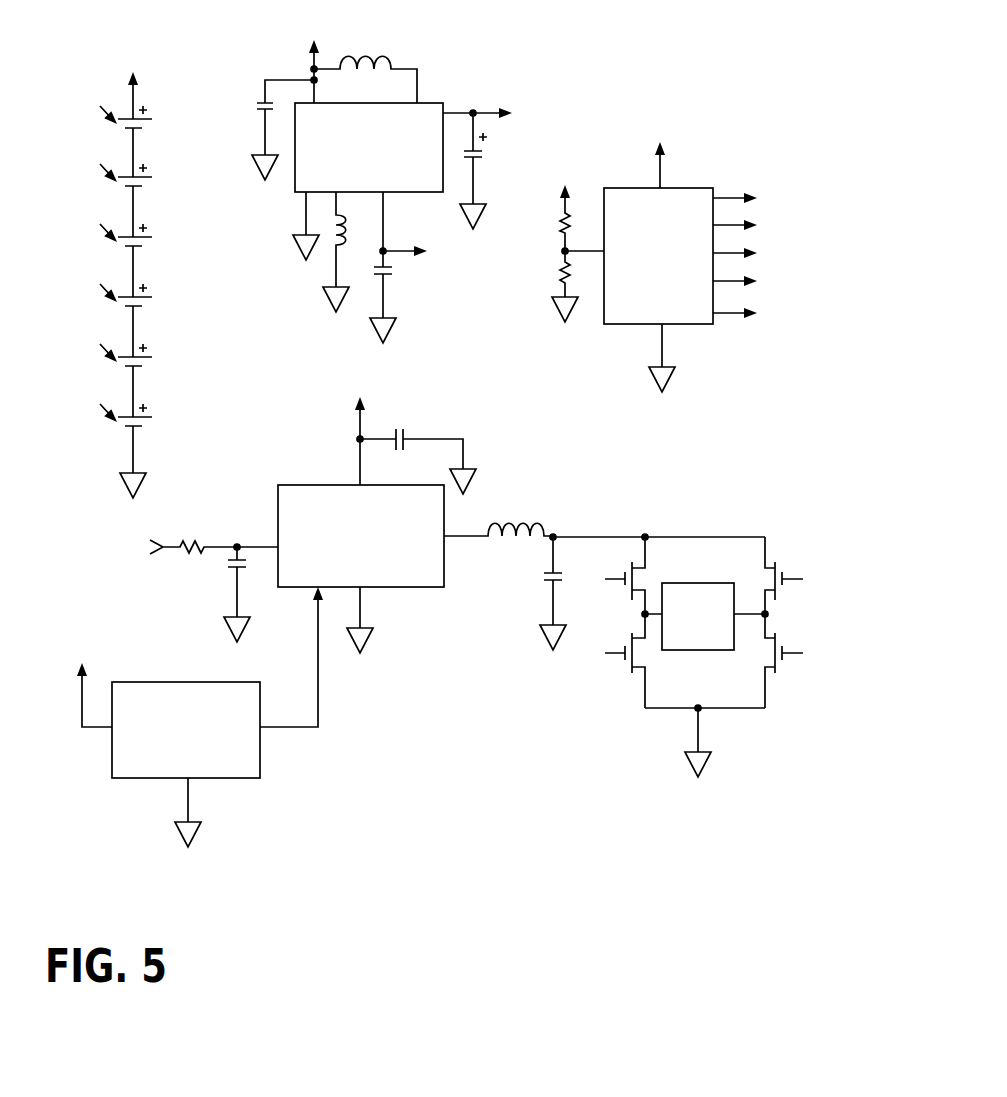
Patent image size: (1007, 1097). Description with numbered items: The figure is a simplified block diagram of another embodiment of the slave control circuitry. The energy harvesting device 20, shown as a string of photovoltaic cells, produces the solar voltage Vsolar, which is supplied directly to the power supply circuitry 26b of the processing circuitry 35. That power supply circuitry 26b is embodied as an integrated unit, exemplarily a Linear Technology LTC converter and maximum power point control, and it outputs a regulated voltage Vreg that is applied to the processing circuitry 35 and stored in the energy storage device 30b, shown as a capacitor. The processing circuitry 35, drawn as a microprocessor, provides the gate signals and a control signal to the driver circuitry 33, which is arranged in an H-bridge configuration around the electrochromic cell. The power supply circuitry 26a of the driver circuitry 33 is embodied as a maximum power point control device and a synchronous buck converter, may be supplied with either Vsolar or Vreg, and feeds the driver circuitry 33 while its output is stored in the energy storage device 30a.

The energy harvesting device 20 is at (84, 251).
The power supply circuitry 26b is at (428, 103).
The energy storage device 30b is at (478, 152).
The processing circuitry 35 is at (842, 214).
The energy storage device 30a is at (410, 431).
The power supply circuitry 26a is at (460, 597).
The driver circuitry 33 is at (700, 537).